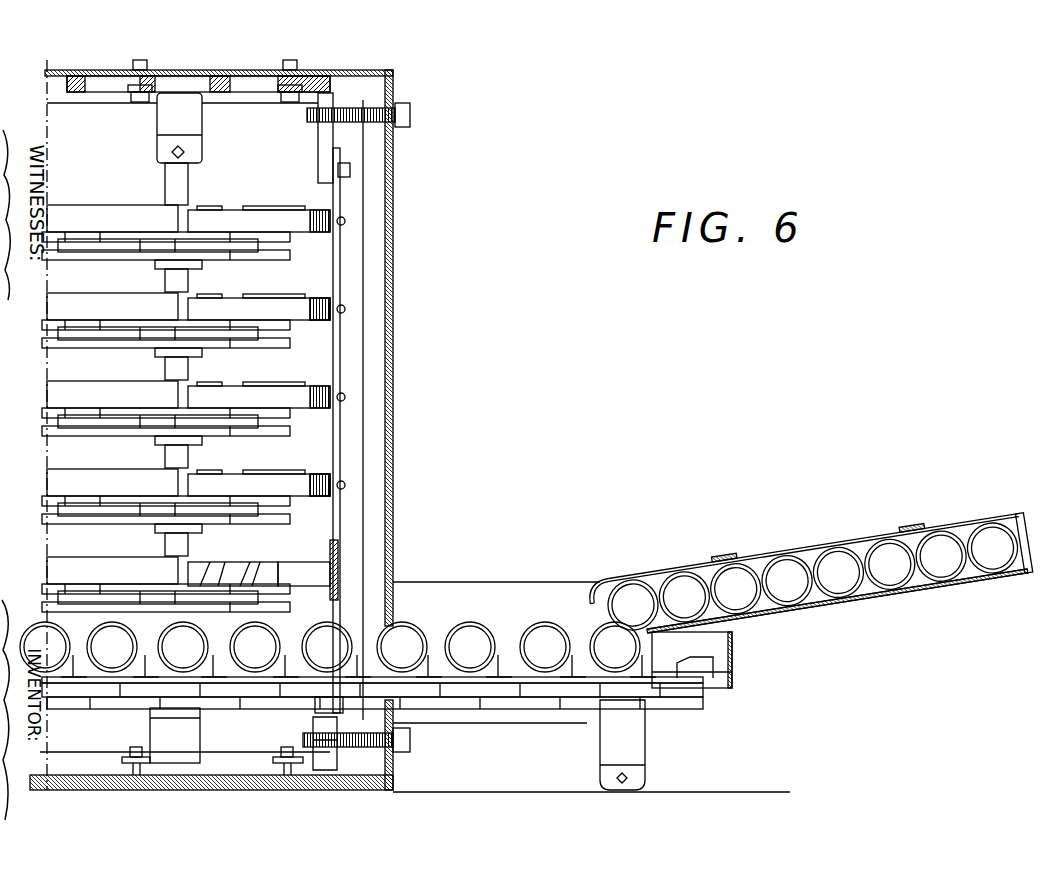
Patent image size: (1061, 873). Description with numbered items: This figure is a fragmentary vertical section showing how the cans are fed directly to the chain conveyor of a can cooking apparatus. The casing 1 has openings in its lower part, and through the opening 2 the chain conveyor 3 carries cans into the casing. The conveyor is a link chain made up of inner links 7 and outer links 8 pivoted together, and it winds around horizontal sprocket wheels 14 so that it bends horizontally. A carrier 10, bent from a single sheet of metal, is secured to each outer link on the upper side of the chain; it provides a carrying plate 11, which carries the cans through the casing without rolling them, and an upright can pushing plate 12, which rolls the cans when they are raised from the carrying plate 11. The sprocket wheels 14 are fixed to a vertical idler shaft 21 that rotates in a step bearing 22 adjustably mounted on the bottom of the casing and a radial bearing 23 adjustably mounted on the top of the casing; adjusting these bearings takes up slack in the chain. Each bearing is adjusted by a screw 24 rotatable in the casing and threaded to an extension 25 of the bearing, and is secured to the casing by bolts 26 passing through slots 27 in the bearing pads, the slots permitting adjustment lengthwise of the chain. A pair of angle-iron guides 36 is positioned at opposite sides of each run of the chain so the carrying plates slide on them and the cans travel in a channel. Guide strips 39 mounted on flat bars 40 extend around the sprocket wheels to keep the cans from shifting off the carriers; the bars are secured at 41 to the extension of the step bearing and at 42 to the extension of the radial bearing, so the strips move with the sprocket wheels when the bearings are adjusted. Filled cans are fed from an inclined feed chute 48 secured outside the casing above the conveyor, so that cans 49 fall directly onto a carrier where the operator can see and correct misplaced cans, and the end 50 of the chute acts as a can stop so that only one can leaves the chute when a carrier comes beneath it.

The casing 1 is at (393, 480).
The opening 2 is at (395, 626).
The chain conveyor 3 is at (322, 430).
The inner links 7 is at (585, 709).
The outer links 8 is at (545, 697).
The carrier 10 is at (710, 672).
The carrying plate 11 is at (298, 655).
The can pushing plate 12 is at (225, 655).
The sprocket wheels 14 is at (200, 265).
The vertical idler shaft 21 is at (320, 348).
The step bearing 22 is at (170, 740).
The radial bearing 23 is at (180, 112).
The screw 24 is at (372, 122).
The extension 25 is at (325, 130).
The bolts 26 is at (143, 62).
The slots 27 is at (110, 83).
The guides 36 is at (60, 385).
The guide strips 39 is at (340, 300).
The flat bars 40 is at (338, 448).
The securing point to step bearing extension 41 is at (315, 712).
The securing point to radial bearing extension 42 is at (350, 175).
The inclined feed chute 48 is at (805, 615).
The cans 49 is at (837, 572).
The end of the chute 50 is at (597, 593).